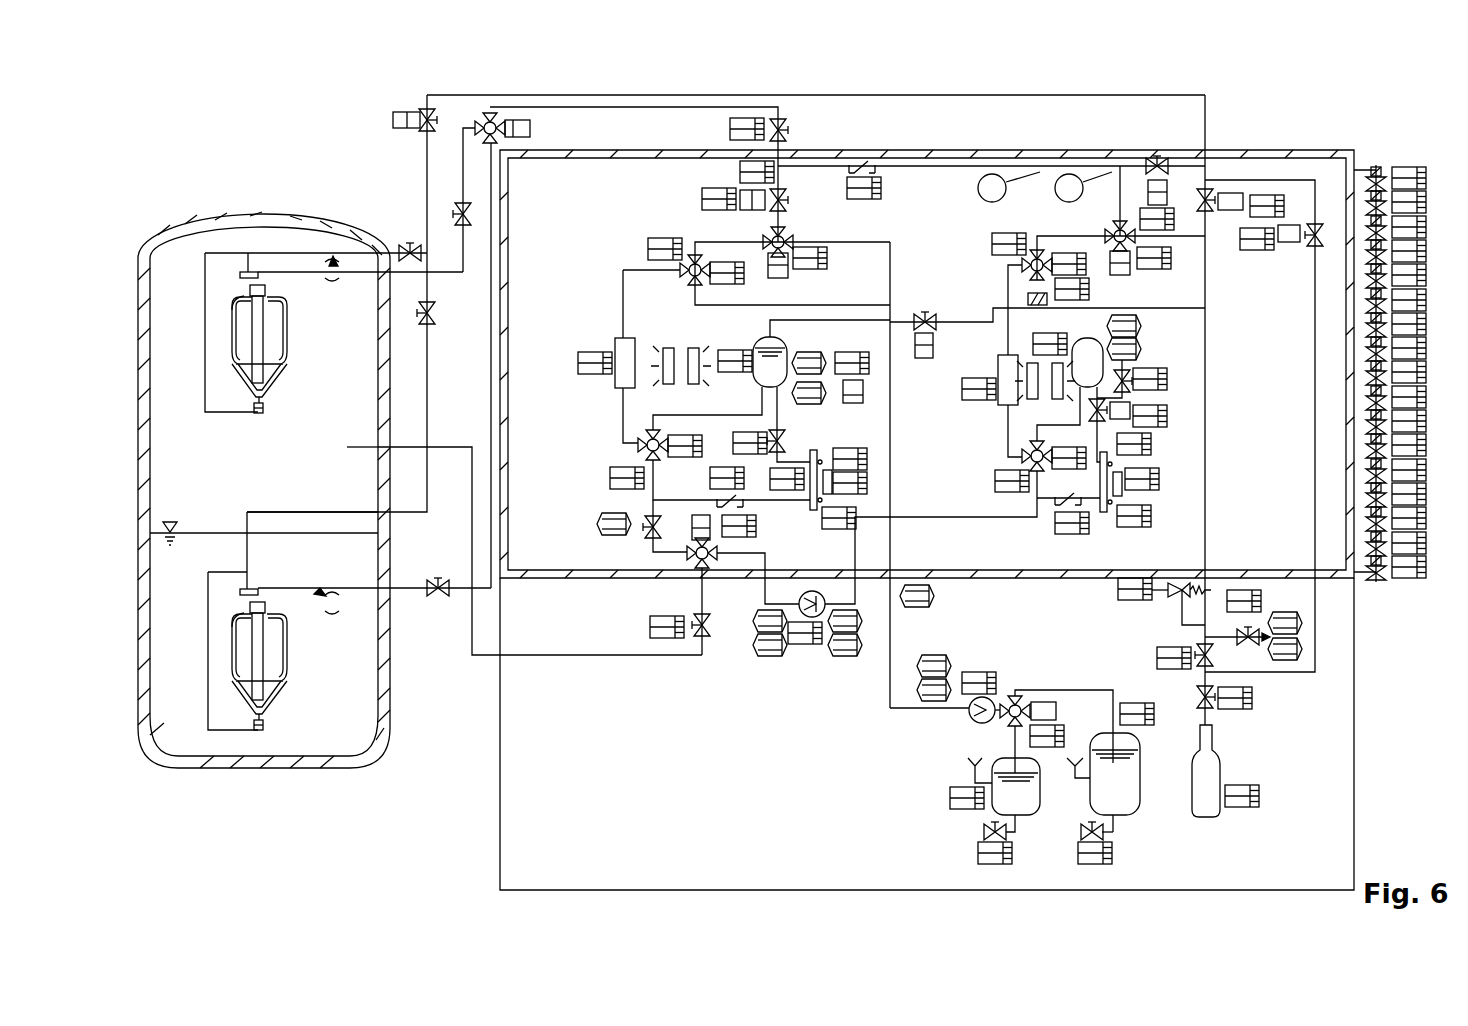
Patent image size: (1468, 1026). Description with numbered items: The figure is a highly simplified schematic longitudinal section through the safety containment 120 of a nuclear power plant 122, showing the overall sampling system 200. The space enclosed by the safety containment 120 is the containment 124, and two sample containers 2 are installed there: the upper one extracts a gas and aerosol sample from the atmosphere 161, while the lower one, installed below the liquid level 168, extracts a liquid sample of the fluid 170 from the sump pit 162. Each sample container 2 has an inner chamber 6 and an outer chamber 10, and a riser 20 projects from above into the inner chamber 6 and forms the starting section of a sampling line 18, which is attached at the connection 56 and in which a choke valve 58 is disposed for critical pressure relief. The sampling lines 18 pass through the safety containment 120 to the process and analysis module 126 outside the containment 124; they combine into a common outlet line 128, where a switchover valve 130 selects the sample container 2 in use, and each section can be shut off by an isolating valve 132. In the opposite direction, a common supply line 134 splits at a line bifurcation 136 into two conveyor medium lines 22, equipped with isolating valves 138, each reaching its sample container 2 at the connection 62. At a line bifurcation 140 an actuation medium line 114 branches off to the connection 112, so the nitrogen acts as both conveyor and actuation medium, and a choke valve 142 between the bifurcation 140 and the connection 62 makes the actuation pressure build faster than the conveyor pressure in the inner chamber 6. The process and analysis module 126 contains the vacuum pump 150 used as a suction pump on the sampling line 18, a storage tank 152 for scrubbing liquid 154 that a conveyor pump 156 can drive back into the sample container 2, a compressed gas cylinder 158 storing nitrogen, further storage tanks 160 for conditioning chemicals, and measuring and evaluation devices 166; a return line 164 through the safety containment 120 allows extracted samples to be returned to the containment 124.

The sample container 2 is at (291, 327).
The inner chamber 6 is at (291, 318).
The outer chamber 10 is at (284, 374).
The sampling line 18 is at (370, 275).
The riser 20 is at (268, 343).
The conveyor medium line 22 is at (245, 281).
The connection 56 is at (270, 288).
The choke valve 58 is at (332, 256).
The connection 62 is at (240, 298).
The connection 112 is at (266, 409).
The actuation medium line 114 is at (204, 396).
The safety containment 120 is at (325, 213).
The nuclear power plant 122 is at (882, 498).
The containment 124 is at (175, 470).
The process and analysis module 126 is at (500, 805).
The outlet line 128 is at (630, 107).
The switchover valve 130 is at (478, 105).
The isolating valve 132 is at (463, 226).
The supply line 134 is at (850, 95).
The line bifurcation 136 is at (422, 247).
The isolating valve 138 is at (398, 248).
The line bifurcation 140 is at (249, 252).
The choke valve 142 is at (240, 272).
The vacuum pump 150 is at (805, 592).
The storage tank 152 is at (1103, 730).
The scrubbing liquid 154 is at (250, 372).
The conveyor pump 156 is at (968, 716).
The compressed gas cylinder 158 is at (1215, 766).
The storage tank 160 is at (992, 787).
The atmosphere 161 is at (172, 352).
The sump pit 162 is at (362, 688).
The return line 164 is at (471, 533).
The measuring and evaluation device 166 is at (612, 430).
The liquid level 168 is at (160, 527).
The fluid 170 is at (155, 702).
The sampling system 200 is at (882, 498).